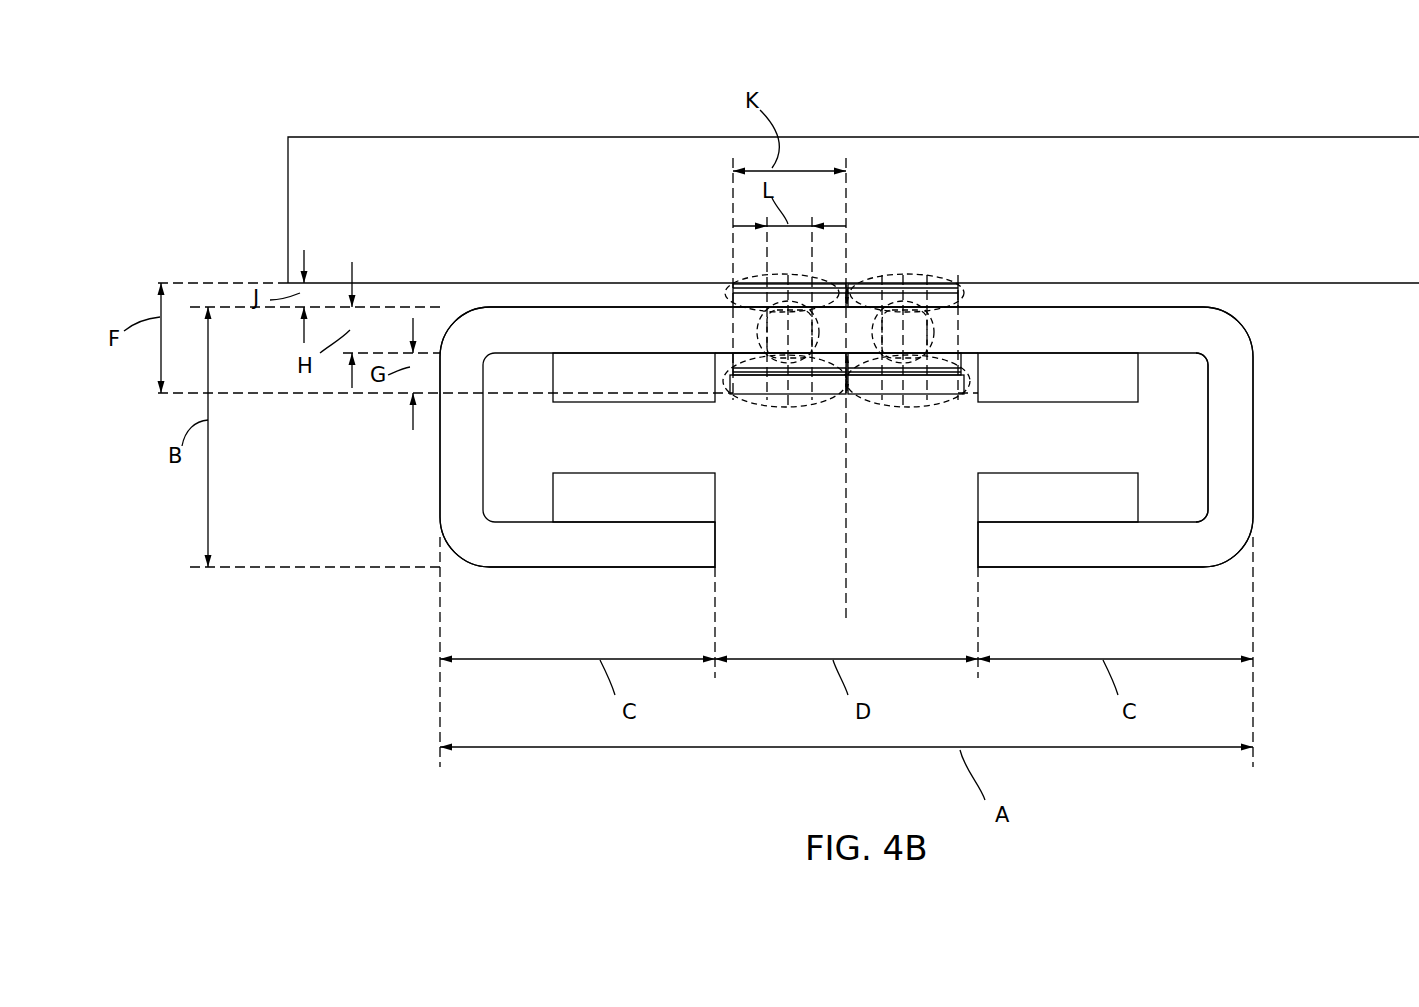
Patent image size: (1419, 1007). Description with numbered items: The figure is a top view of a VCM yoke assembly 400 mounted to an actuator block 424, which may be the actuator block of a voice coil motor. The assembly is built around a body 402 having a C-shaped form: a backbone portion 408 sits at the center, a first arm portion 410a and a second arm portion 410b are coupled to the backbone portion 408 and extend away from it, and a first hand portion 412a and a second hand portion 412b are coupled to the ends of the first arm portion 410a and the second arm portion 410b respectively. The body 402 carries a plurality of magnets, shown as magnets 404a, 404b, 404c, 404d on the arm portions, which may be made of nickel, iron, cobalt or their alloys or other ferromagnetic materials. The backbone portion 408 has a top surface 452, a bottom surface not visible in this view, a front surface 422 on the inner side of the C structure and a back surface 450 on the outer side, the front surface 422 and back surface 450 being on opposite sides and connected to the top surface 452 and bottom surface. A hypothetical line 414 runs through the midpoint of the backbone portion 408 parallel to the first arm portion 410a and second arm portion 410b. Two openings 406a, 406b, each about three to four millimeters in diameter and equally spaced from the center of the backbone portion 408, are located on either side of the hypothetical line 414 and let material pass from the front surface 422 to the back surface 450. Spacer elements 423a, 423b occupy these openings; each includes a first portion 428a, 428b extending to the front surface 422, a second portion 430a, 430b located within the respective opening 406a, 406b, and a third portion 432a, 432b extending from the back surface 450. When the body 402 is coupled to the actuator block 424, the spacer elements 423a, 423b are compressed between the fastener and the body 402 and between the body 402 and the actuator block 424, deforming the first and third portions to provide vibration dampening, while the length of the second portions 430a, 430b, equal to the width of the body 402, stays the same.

The VCM yoke assembly 400 is at (245, 115).
The body 402 is at (493, 567).
The magnet 404a is at (667, 389).
The magnet 404b is at (657, 507).
The magnet 404c is at (1097, 389).
The magnet 404d is at (1096, 507).
The opening 406a is at (754, 334).
The opening 406b is at (937, 333).
The backbone portion 408 is at (630, 344).
The first arm portion 410a is at (463, 448).
The second arm portion 410b is at (1233, 440).
The first hand portion 412a is at (623, 557).
The second hand portion 412b is at (1126, 554).
The hypothetical line 414 is at (848, 580).
The front surface 422 is at (1183, 355).
The spacer element 423a is at (806, 398).
The spacer element 423b is at (923, 398).
The actuator block 424 is at (1052, 185).
The first portion 428a is at (740, 402).
The first portion 428b is at (945, 403).
The second portion 430a is at (766, 332).
The second portion 430b is at (932, 318).
The third portion 432a is at (762, 278).
The third portion 432b is at (917, 277).
The back surface 450 is at (1144, 320).
The top surface 452 is at (527, 330).